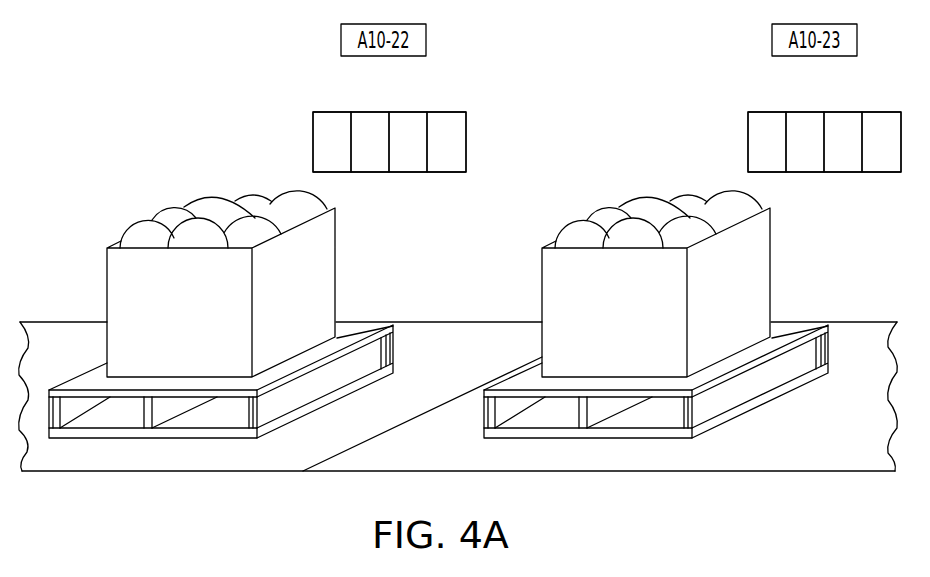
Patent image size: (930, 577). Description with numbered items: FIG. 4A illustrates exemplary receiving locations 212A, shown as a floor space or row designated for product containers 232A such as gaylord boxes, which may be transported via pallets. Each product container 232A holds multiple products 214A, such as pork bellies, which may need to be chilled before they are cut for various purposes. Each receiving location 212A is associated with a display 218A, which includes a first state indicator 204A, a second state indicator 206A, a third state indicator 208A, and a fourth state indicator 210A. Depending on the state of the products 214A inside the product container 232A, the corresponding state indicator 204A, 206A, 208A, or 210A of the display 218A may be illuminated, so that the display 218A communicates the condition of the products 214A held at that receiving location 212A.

The first state indicator 204A is at (327, 118).
The second state indicator 206A is at (363, 162).
The third state indicator 208A is at (405, 118).
The fourth state indicator 210A is at (447, 162).
The display 218A is at (313, 143).
The products 214A is at (207, 200).
The product container 232A is at (330, 267).
The receiving location 212A is at (149, 465).